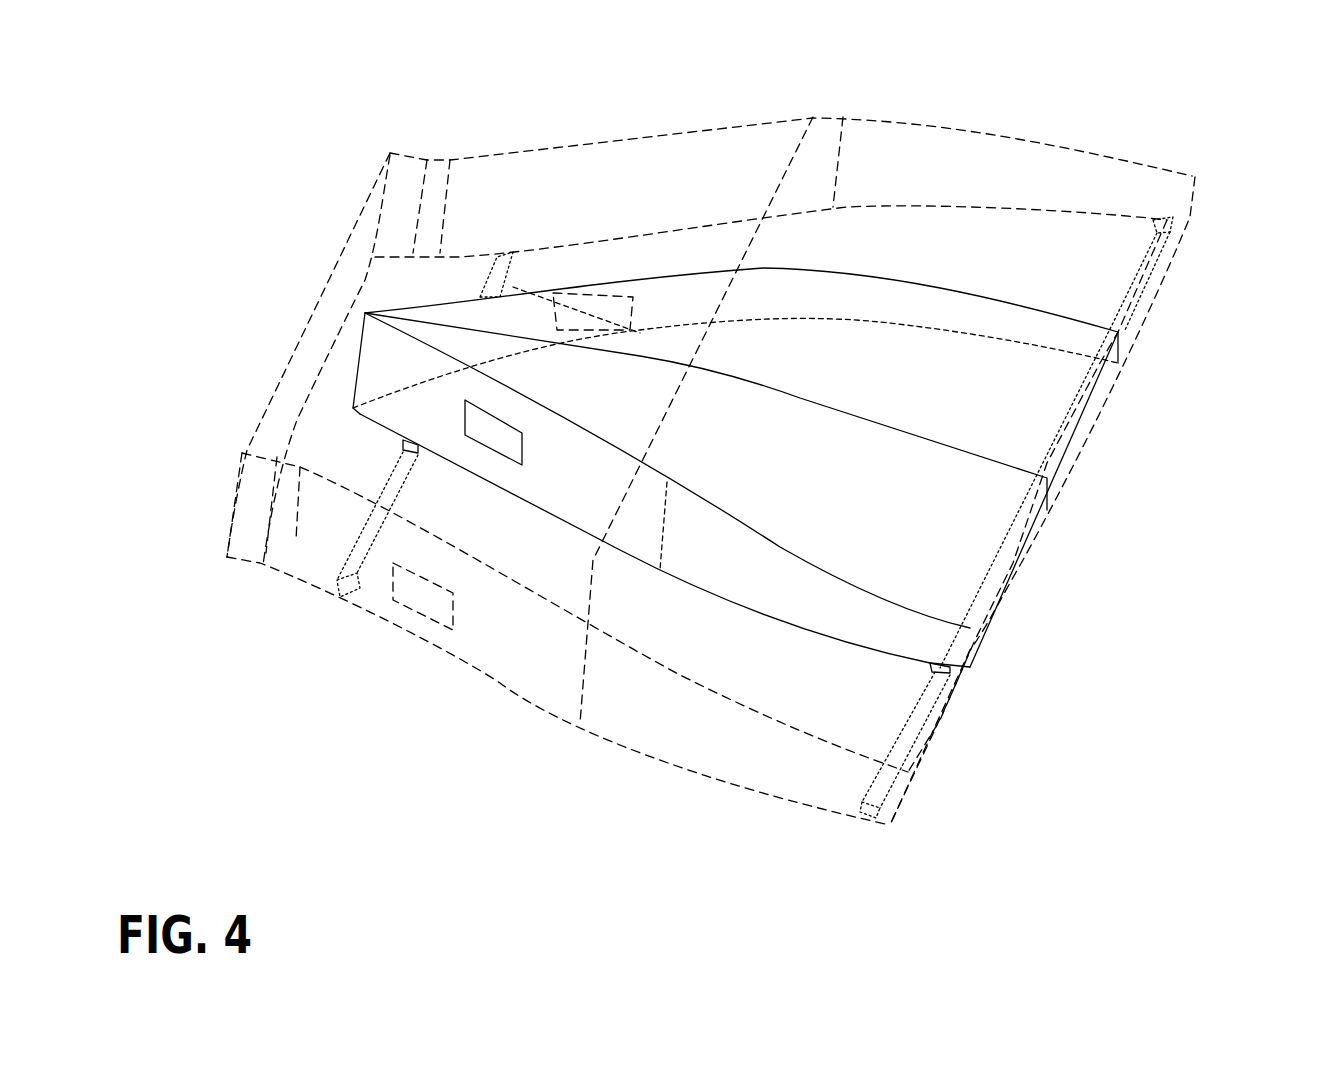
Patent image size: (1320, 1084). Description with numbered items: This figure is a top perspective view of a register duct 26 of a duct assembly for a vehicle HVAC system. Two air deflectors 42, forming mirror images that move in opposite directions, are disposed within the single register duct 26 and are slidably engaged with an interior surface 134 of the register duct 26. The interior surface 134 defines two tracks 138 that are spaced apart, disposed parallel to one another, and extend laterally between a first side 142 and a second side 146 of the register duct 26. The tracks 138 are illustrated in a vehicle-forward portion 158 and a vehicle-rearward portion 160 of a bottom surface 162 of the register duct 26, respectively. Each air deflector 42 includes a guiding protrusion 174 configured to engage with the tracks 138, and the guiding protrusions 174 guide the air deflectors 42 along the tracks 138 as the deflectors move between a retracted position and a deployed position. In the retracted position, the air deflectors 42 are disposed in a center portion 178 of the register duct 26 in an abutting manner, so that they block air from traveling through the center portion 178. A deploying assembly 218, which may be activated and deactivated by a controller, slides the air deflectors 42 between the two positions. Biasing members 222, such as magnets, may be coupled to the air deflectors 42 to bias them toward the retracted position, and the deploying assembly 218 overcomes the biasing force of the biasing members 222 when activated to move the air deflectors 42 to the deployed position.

The register duct 26 is at (1076, 178).
The air deflector 42 is at (1057, 410).
The interior surface 134 is at (323, 543).
The track 138 is at (353, 577).
The first side 142 is at (620, 703).
The second side 146 is at (898, 160).
The vehicle-forward portion 158 is at (313, 580).
The vehicle-rearward portion 160 is at (823, 770).
The bottom surface 162 is at (1083, 270).
The guiding protrusion 174 is at (937, 670).
The center portion 178 is at (365, 416).
The deploying assembly 218 is at (477, 417).
The biasing member 222 is at (557, 297).